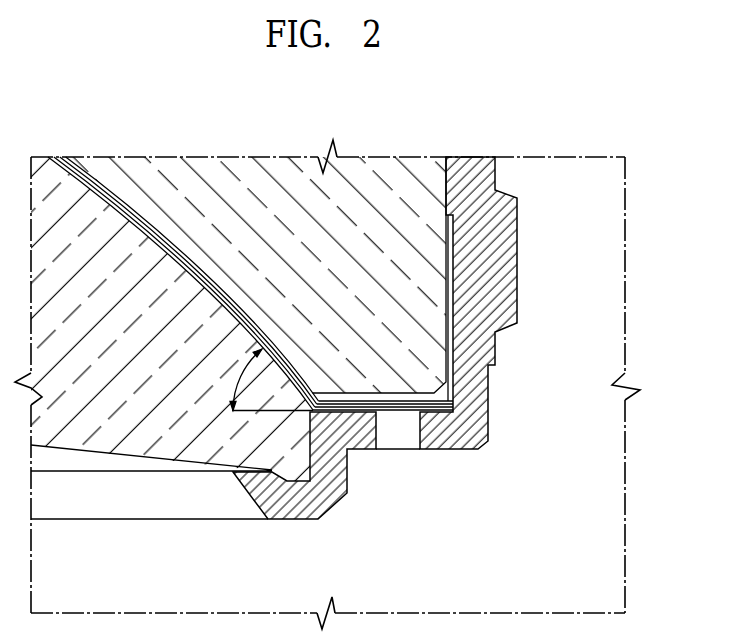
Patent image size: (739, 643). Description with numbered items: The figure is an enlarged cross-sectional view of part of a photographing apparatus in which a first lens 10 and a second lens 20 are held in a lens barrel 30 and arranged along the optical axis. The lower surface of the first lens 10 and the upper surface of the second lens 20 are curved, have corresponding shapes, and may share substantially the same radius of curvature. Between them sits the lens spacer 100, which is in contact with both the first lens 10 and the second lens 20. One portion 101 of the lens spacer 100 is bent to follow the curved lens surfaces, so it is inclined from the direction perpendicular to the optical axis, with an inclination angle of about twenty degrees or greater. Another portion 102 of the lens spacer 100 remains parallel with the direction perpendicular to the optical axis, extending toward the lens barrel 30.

The first lens 10 is at (428, 348).
The second lens 20 is at (292, 465).
The lens barrel 30 is at (512, 273).
The lens spacer 100 is at (275, 351).
The portion of the lens spacer 101 is at (311, 376).
The another portion of the lens spacer 102 is at (431, 413).